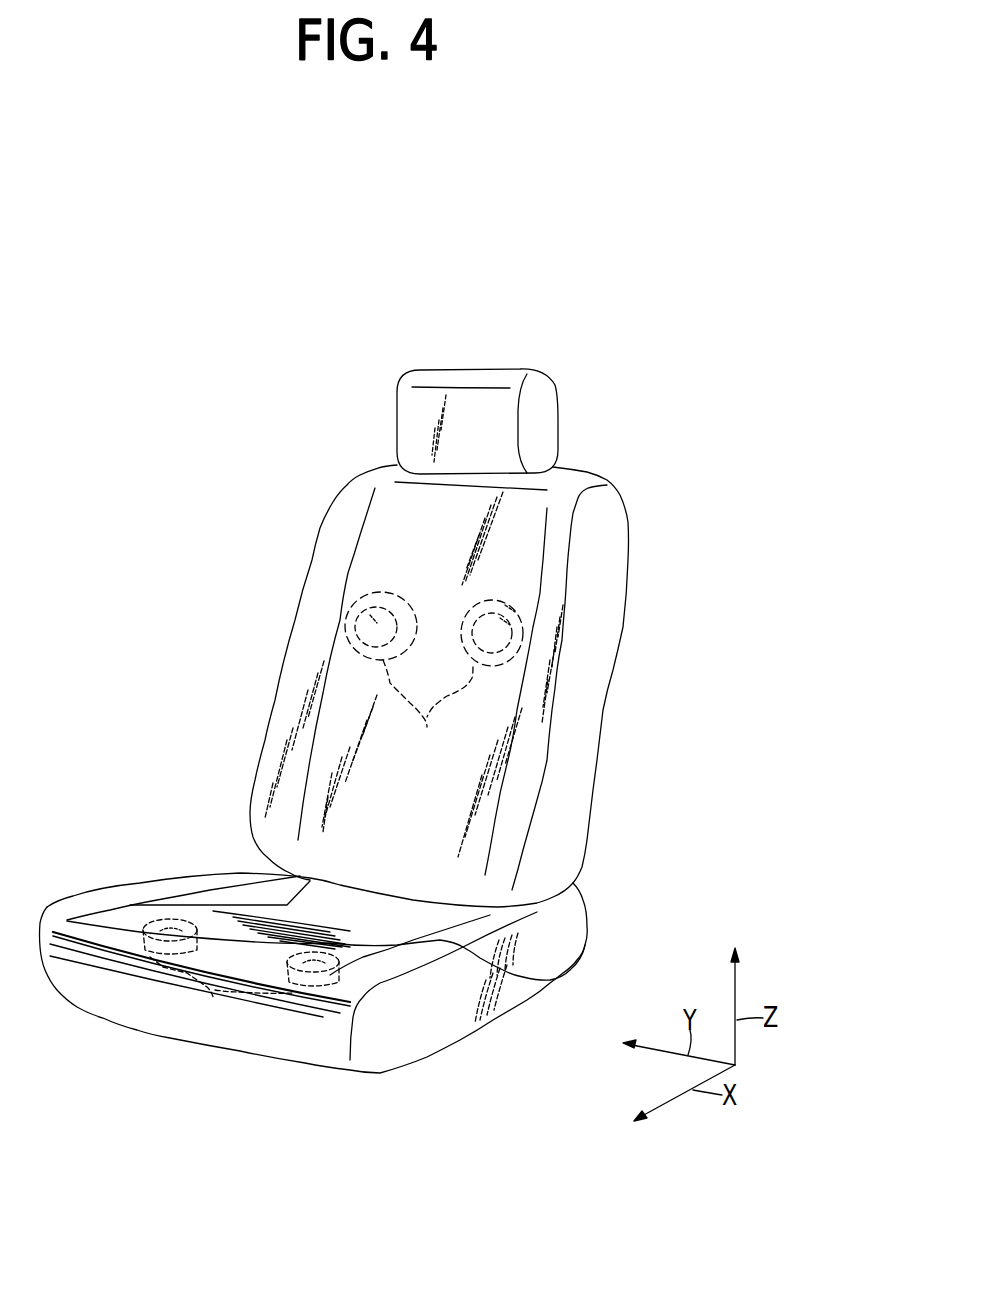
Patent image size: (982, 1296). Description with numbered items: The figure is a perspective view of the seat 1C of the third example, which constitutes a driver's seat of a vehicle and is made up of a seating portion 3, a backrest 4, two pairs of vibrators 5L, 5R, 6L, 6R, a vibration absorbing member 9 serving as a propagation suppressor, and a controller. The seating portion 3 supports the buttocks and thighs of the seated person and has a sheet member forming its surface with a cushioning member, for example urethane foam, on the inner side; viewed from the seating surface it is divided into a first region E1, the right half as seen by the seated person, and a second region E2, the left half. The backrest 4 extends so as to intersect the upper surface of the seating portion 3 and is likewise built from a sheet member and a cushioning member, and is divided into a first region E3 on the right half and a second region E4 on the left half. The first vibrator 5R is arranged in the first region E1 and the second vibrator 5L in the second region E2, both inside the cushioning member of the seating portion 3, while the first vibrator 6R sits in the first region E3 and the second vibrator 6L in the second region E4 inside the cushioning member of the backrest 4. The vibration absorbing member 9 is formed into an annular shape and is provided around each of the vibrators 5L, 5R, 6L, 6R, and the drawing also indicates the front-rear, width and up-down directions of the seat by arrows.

The seat 1C is at (646, 438).
The seating portion 3 is at (453, 1003).
The backrest 4 is at (598, 703).
The first vibrator 5R is at (143, 977).
The second vibrator 5L is at (293, 1003).
The first vibrator 6R is at (348, 598).
The second vibrator 6L is at (528, 607).
The vibration absorbing member 9 is at (427, 727).
The first region E1 is at (173, 901).
The second region E2 is at (550, 980).
The first region E3 is at (394, 553).
The second region E4 is at (514, 571).